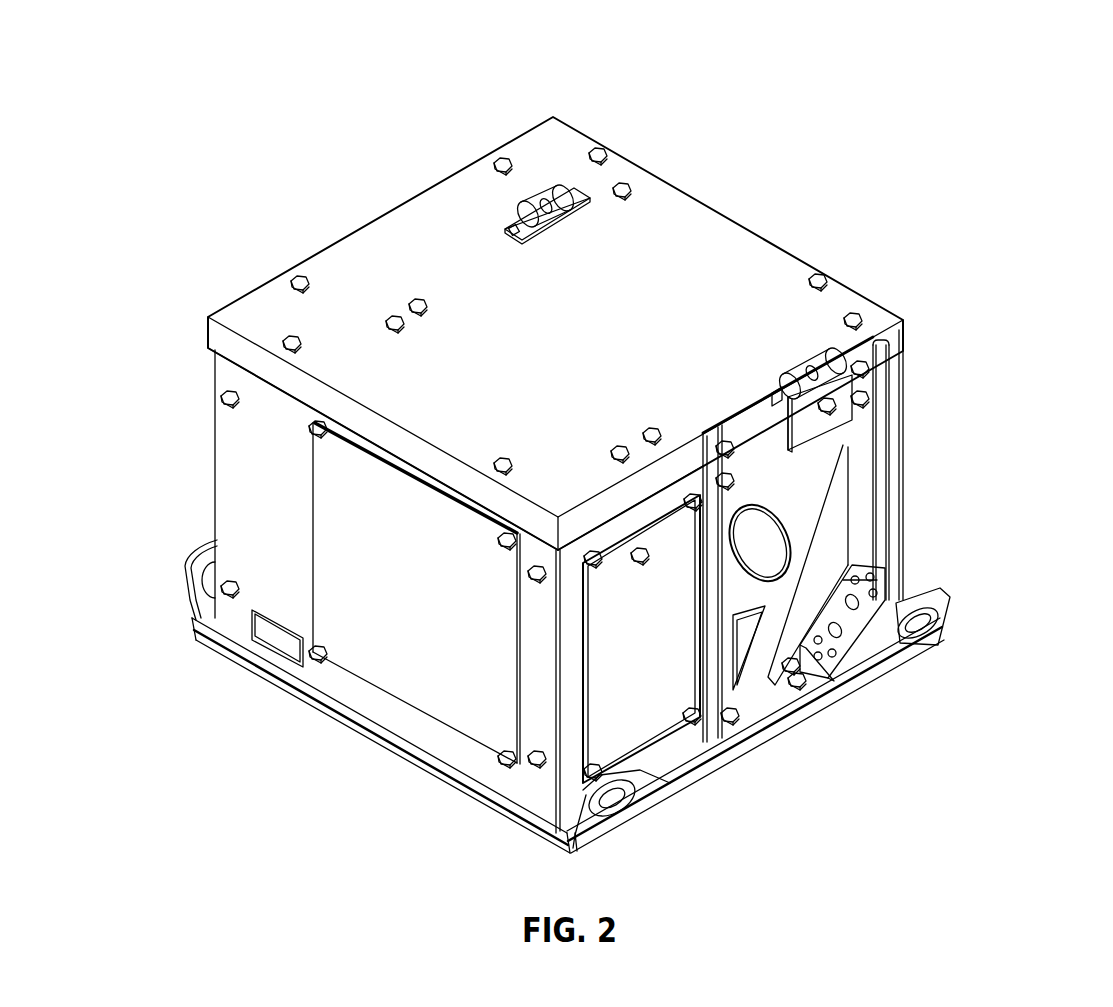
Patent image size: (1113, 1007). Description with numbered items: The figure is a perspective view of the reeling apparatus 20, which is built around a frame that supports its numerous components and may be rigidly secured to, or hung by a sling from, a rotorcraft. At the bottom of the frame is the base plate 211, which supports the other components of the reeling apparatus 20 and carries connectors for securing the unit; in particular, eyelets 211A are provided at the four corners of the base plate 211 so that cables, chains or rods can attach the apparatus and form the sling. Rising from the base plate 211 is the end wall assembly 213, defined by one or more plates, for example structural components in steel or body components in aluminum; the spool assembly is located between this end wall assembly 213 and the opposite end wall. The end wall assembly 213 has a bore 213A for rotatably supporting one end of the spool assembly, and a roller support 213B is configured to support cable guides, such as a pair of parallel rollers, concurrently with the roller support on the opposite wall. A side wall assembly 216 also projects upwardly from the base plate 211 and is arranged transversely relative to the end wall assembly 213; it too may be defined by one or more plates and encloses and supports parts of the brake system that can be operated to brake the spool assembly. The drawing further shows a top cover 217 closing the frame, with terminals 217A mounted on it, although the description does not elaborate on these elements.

The reeling apparatus 20 is at (577, 441).
The base plate 211 is at (568, 735).
The eyelets 211A is at (577, 667).
The end wall assembly 213 is at (819, 541).
The bore 213A is at (810, 631).
The roller support 213B is at (916, 630).
The side wall assembly 216 is at (349, 591).
The top cover 217 is at (555, 331).
The terminal 217A is at (727, 237).